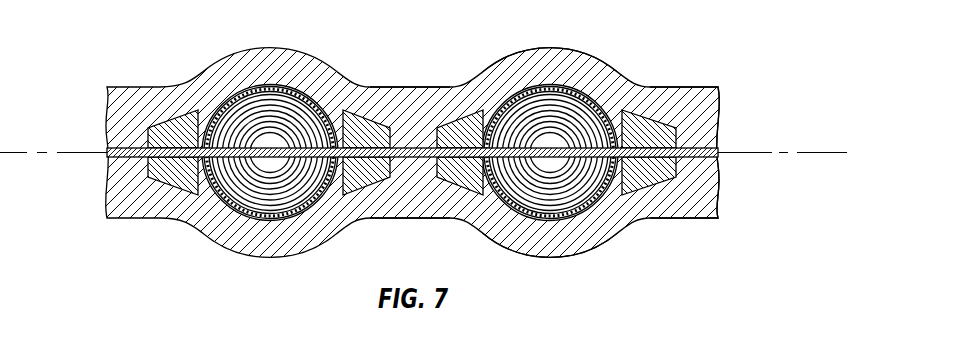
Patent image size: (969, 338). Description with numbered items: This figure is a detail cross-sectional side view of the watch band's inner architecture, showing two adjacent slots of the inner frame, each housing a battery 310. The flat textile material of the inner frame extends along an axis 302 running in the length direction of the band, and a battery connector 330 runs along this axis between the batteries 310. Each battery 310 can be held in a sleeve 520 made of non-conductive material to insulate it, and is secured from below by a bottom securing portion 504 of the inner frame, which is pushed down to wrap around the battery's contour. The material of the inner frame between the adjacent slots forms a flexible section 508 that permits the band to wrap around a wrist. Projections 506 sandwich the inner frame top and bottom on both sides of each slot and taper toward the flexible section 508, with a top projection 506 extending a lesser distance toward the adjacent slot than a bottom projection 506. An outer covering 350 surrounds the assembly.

The axis 302 is at (785, 148).
The battery 310 is at (600, 212).
The battery connector 330 is at (435, 128).
The outer covering 350 is at (697, 97).
The bottom securing portion 504 is at (496, 206).
The projection 506 is at (367, 128).
The flexible section 508 is at (397, 125).
The sleeve 520 is at (618, 63).